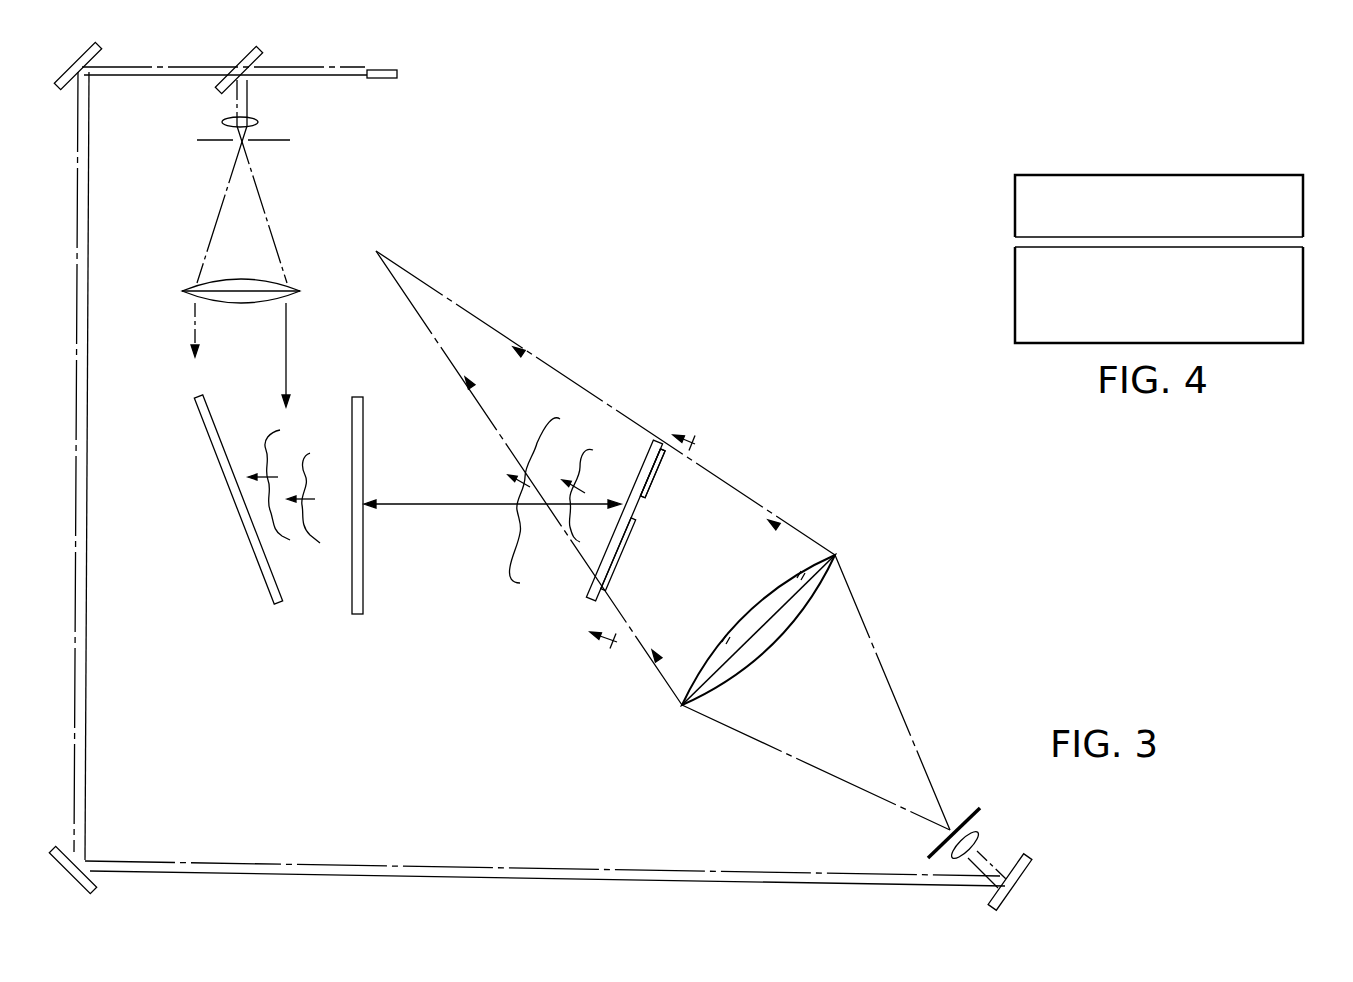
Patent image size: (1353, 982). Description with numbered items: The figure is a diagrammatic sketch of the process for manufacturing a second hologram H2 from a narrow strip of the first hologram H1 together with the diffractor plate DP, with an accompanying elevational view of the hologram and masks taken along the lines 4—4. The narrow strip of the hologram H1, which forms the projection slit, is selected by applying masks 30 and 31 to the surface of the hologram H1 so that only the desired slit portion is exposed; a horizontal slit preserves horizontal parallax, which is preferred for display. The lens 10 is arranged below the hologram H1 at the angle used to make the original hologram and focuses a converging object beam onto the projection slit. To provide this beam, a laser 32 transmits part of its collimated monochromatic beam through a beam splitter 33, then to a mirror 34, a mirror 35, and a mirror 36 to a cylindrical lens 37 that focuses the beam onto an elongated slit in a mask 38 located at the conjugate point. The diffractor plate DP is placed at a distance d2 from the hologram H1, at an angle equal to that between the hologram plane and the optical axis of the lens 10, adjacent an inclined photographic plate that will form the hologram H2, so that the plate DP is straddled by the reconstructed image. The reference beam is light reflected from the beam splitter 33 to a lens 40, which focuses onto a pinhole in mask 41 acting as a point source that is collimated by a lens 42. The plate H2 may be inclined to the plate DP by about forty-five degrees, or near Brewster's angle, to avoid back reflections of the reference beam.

In FIG. 3, the lens 10 is at (797, 612).
In FIG. 3, the mask 30 is at (622, 553).
In FIG. 4, the mask 30 is at (1297, 302).
In FIG. 3, the mask 31 is at (652, 470).
In FIG. 4, the mask 31 is at (1297, 205).
In FIG. 3, the laser 32 is at (384, 70).
In FIG. 3, the beam splitter 33 is at (238, 52).
In FIG. 3, the mirror 34 is at (79, 58).
In FIG. 3, the mirror 35 is at (66, 872).
In FIG. 3, the mirror 36 is at (1028, 877).
In FIG. 3, the cylindrical lens 37 is at (981, 838).
In FIG. 3, the mask 38 is at (977, 808).
In FIG. 3, the lens 40 is at (256, 121).
In FIG. 3, the mask 41 is at (270, 141).
In FIG. 3, the lens 42 is at (297, 288).
In FIG. 3, the section line 4— 4 is at (651, 545).
In FIG. 3, the first hologram H1 is at (656, 468).
In FIG. 4, the first hologram H1 is at (1297, 243).
In FIG. 3, the second hologram H2 is at (263, 578).
In FIG. 3, the diffractor plate DP is at (363, 612).
In FIG. 3, the distance d2 is at (492, 502).